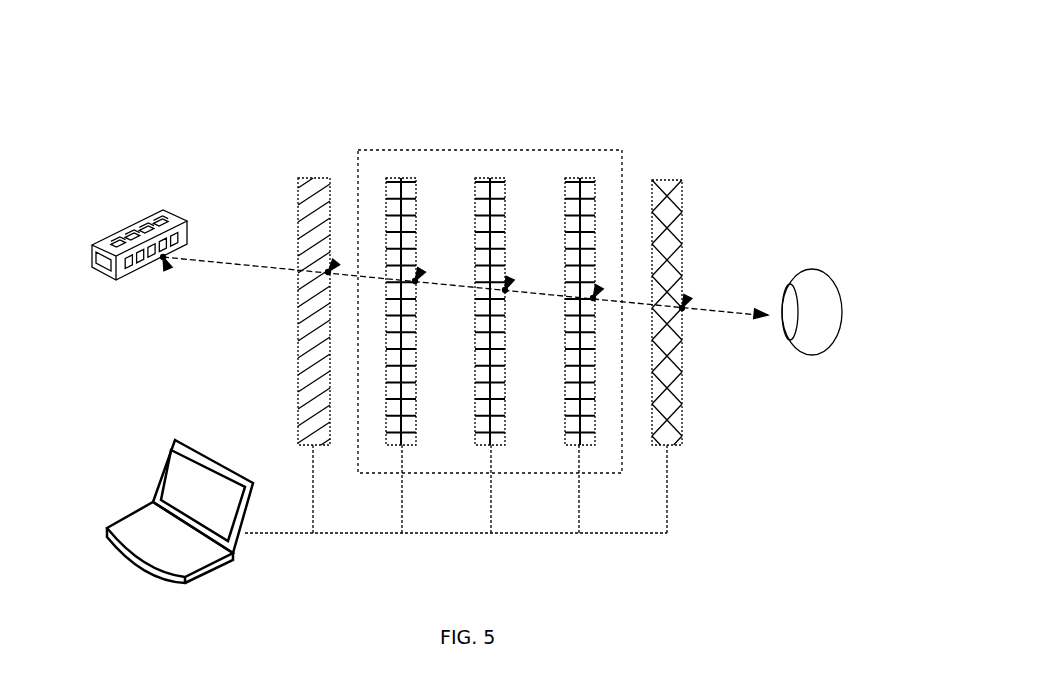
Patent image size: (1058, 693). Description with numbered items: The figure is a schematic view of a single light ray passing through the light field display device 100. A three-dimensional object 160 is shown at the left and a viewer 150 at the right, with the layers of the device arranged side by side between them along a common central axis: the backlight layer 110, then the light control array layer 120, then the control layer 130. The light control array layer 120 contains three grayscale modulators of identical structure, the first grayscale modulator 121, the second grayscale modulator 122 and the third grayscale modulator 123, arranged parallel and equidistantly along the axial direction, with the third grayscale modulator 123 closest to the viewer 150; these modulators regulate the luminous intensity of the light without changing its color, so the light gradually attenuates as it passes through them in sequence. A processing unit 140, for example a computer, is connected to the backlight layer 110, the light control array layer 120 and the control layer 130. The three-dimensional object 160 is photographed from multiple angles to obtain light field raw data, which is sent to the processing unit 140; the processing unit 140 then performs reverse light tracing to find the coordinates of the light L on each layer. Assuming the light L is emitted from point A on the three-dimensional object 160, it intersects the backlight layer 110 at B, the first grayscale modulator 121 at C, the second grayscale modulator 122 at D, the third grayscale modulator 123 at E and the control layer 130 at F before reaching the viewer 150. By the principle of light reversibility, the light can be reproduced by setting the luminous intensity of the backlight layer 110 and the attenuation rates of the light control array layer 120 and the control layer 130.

The light field display device 100 is at (803, 119).
The backlight layer 110 is at (312, 178).
The light control array layer 120 is at (623, 165).
The first grayscale modulator 121 is at (400, 178).
The second grayscale modulator 122 is at (490, 178).
The third grayscale modulator 123 is at (580, 178).
The control layer 130 is at (685, 210).
The processing unit 140 is at (152, 500).
The viewer 150 is at (838, 290).
The three-dimensional object 160 is at (140, 217).
The point A is at (168, 269).
The intersection coordinate B is at (336, 262).
The intersection coordinate C is at (422, 270).
The intersection coordinate D is at (510, 278).
The intersection coordinate E is at (599, 287).
The intersection coordinate F is at (688, 296).
The light L is at (732, 296).